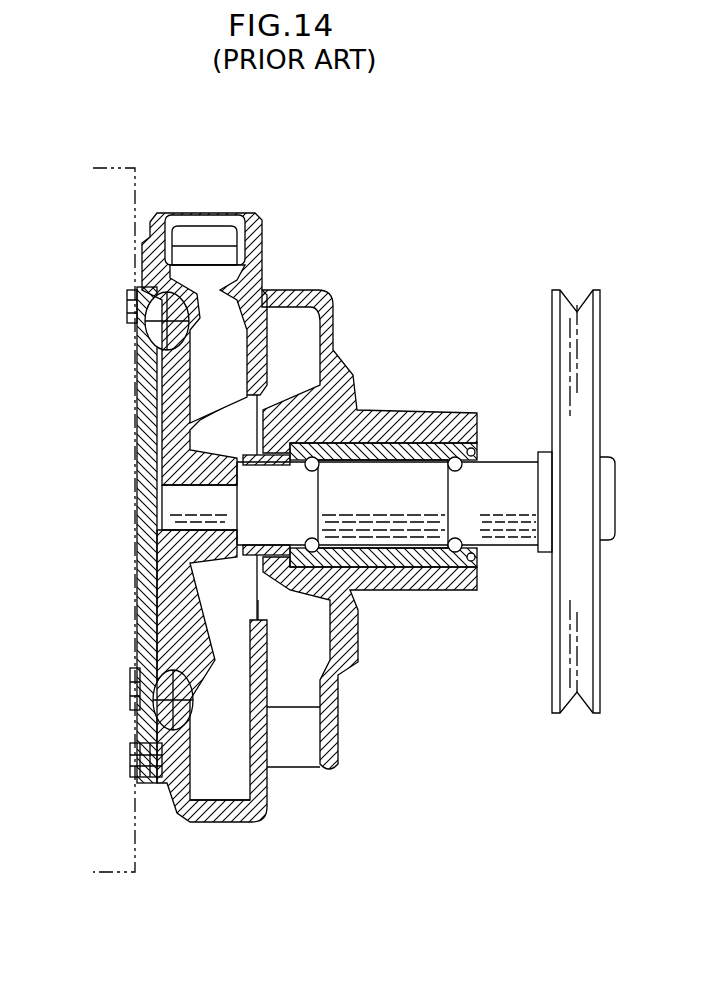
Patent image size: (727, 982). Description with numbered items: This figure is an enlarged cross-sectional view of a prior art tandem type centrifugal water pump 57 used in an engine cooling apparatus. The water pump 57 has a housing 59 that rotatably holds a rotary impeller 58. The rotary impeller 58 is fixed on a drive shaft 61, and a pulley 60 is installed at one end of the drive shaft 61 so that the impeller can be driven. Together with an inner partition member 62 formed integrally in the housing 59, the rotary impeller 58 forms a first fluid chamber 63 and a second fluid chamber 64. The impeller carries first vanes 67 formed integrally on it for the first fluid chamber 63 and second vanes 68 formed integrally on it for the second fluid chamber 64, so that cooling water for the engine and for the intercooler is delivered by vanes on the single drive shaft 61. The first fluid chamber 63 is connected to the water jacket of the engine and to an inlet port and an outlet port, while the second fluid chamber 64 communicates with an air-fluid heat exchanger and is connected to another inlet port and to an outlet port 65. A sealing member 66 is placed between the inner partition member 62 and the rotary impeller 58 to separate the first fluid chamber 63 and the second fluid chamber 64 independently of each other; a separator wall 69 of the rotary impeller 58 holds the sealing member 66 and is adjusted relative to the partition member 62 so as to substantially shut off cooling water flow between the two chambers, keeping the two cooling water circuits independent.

The tandem type centrifugal water pump 57 is at (157, 793).
The rotary impeller 58 is at (147, 470).
The housing 59 is at (181, 818).
The pulley 60 is at (551, 330).
The drive shaft 61 is at (500, 462).
The inner partition member 62 is at (206, 298).
The first fluid chamber 63 is at (227, 776).
The second fluid chamber 64 is at (145, 337).
The outlet port 65 is at (225, 245).
The sealing member 66 is at (262, 300).
The first vanes 67 is at (237, 663).
The second vanes 68 is at (152, 670).
The separator wall 69 is at (185, 628).